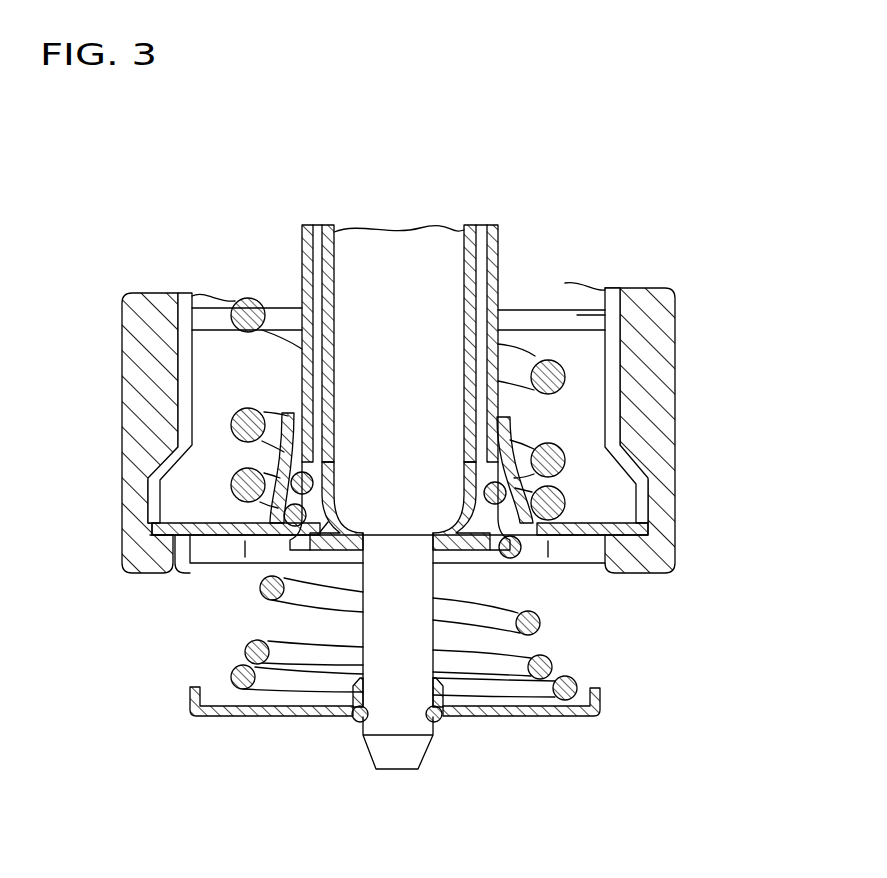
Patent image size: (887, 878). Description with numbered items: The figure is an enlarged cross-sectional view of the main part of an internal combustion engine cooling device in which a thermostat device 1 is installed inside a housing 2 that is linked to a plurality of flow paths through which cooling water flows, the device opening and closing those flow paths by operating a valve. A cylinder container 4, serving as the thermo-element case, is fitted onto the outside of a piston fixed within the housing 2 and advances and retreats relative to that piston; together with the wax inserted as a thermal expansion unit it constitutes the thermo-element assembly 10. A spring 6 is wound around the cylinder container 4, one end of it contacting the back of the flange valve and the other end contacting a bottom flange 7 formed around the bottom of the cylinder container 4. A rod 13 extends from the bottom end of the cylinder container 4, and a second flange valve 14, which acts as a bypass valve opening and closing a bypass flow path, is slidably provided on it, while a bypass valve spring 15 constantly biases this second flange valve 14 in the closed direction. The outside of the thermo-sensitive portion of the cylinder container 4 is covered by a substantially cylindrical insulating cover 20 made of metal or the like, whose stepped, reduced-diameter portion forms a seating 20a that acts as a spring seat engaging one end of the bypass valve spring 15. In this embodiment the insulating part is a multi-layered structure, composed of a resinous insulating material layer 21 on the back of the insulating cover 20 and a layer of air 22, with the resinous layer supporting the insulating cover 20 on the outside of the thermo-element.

The thermostat device 1 is at (707, 124).
The device housing 2 is at (643, 316).
The cylinder container 4 is at (418, 230).
The spring 6 is at (567, 367).
The bottom flange 7 is at (611, 513).
The thermo-element assembly 10 is at (334, 520).
The rod 13 is at (392, 745).
The second flange valve 14 is at (515, 717).
The bypass valve spring 15 is at (553, 660).
The insulating cover 20 is at (497, 270).
The seating 20a is at (483, 467).
The resinous insulating material layer 21 is at (478, 400).
The layer of air 22 is at (487, 230).